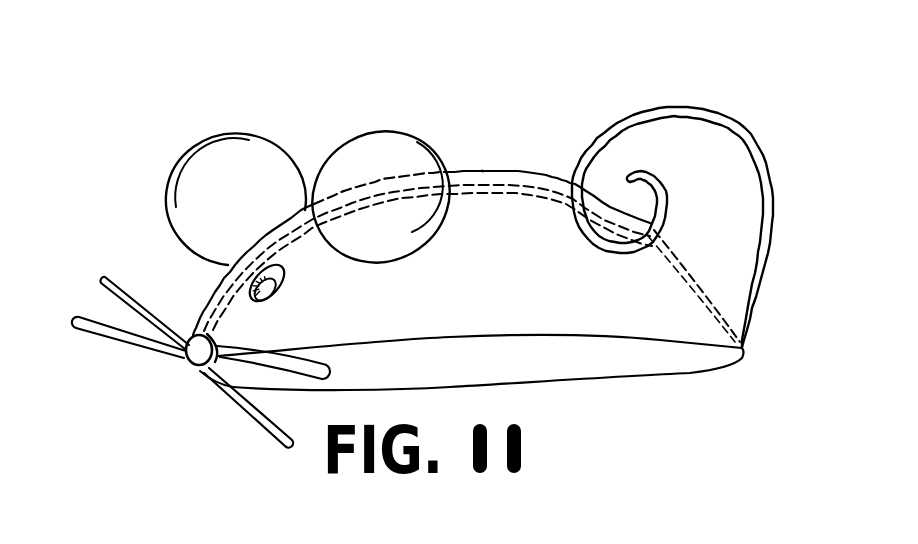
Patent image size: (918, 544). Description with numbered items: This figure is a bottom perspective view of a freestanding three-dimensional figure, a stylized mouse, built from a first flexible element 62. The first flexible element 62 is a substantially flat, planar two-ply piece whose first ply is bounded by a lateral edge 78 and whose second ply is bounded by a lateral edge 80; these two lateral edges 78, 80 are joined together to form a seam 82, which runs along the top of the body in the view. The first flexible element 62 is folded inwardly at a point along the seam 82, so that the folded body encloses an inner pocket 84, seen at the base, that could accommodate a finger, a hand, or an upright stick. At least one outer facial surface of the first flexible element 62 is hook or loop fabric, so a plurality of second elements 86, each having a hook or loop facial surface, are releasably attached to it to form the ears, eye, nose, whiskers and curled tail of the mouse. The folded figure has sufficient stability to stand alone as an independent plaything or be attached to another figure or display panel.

The first flexible element 62 is at (505, 207).
The lateral edge 78 is at (457, 170).
The lateral edge 80 is at (482, 172).
The seam 82 is at (538, 186).
The inner pocket 84 is at (510, 360).
The second elements 86 is at (242, 148).